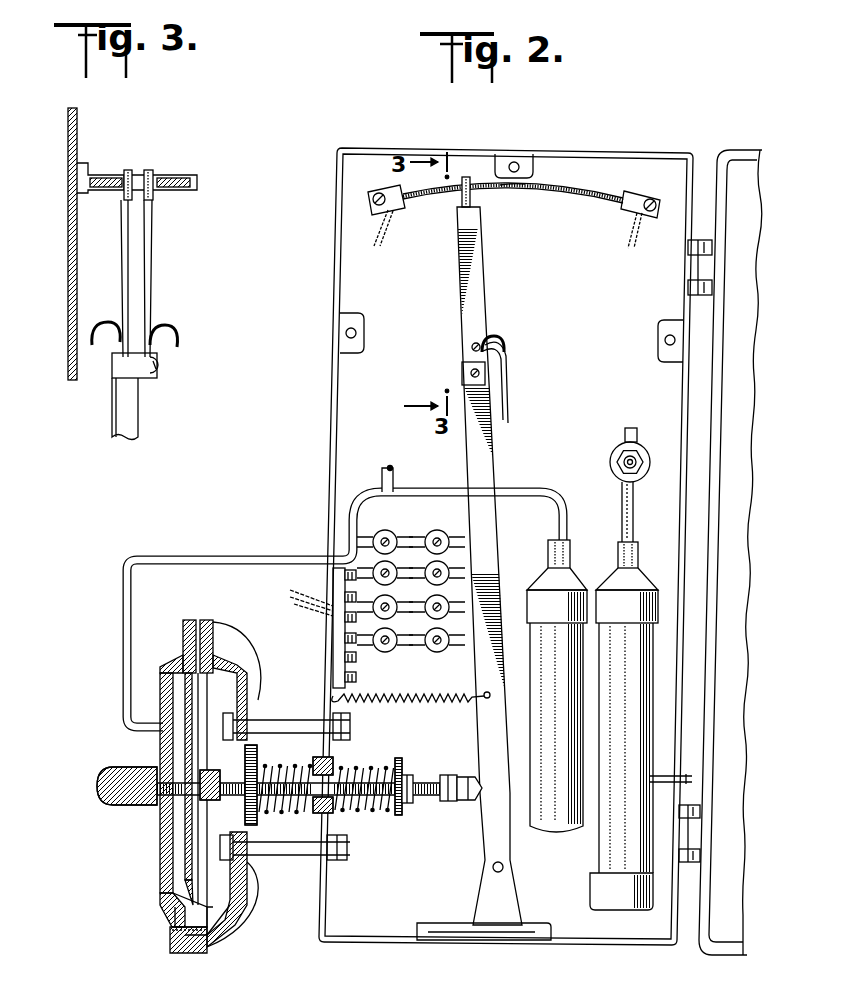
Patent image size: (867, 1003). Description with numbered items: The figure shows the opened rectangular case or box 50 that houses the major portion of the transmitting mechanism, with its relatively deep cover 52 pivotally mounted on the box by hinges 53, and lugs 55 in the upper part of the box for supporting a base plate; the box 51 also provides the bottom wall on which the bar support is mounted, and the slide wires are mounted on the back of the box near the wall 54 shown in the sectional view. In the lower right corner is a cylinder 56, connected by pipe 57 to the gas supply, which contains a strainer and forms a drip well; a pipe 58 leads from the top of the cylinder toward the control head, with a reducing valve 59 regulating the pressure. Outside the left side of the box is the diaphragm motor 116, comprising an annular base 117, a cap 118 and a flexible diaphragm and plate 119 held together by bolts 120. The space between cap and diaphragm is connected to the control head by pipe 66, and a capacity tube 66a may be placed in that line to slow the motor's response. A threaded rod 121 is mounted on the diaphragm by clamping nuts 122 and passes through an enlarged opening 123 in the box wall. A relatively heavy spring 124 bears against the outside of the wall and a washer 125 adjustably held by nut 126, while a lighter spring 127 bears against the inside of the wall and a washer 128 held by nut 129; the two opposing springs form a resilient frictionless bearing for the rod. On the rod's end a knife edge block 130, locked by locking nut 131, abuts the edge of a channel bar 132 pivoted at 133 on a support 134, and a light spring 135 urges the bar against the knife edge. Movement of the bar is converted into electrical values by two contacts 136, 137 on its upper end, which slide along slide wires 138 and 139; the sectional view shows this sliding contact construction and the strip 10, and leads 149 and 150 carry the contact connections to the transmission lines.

In FIG. 2, the bimetal strip 10 is at (580, 190).
In FIG. 2, the rectangular case or box 50 is at (365, 146).
In FIG. 2, the box 51 is at (388, 284).
In FIG. 2, the cover 52 is at (745, 175).
In FIG. 2, the hinges 53 is at (706, 264).
In FIG. 3, the wall 54 is at (68, 250).
In FIG. 2, the lugs 55 is at (522, 161).
In FIG. 2, the cylinder 56 is at (606, 848).
In FIG. 2, the pipe 57 is at (661, 776).
In FIG. 2, the pipe 58 is at (634, 506).
In FIG. 2, the reducing valve 59 is at (613, 457).
In FIG. 2, the pipe 66 is at (385, 474).
In FIG. 2, the capacity tube 66a is at (546, 800).
In FIG. 2, the diaphragm motor 116 is at (141, 857).
In FIG. 2, the annular base 117 is at (246, 668).
In FIG. 2, the cap 118 is at (165, 673).
In FIG. 2, the flexible diaphragm and plate 119 is at (183, 835).
In FIG. 2, the bolts 120 is at (172, 925).
In FIG. 2, the threaded rod 121 is at (425, 800).
In FIG. 2, the clamping nuts 122 is at (163, 765).
In FIG. 2, the enlarged opening 123 is at (337, 777).
In FIG. 2, the heavy spring 124 is at (297, 798).
In FIG. 2, the washer 125 is at (252, 768).
In FIG. 2, the nut 126 is at (248, 797).
In FIG. 2, the lighter spring 127 is at (376, 768).
In FIG. 2, the washer 128 is at (401, 770).
In FIG. 2, the nut 129 is at (407, 816).
In FIG. 2, the knife edge block 130 is at (459, 790).
In FIG. 2, the locking nut 131 is at (447, 796).
In FIG. 3, the channel bar 132 is at (115, 428).
In FIG. 2, the channel bar 132 is at (485, 548).
In FIG. 2, the pivot 133 is at (493, 867).
In FIG. 2, the support 134 is at (490, 903).
In FIG. 2, the light spring 135 is at (382, 697).
In FIG. 3, the contact 136 is at (126, 172).
In FIG. 3, the contact 137 is at (165, 160).
In FIG. 2, the contact 137 is at (462, 197).
In FIG. 3, the slide wire 138 is at (105, 190).
In FIG. 3, the slide wire 139 is at (170, 190).
In FIG. 2, the slide wire 139 is at (517, 194).
In FIG. 3, the lead 149 is at (96, 332).
In FIG. 2, the lead 149 is at (500, 343).
In FIG. 3, the lead 150 is at (172, 336).
In FIG. 2, the lead 150 is at (508, 358).